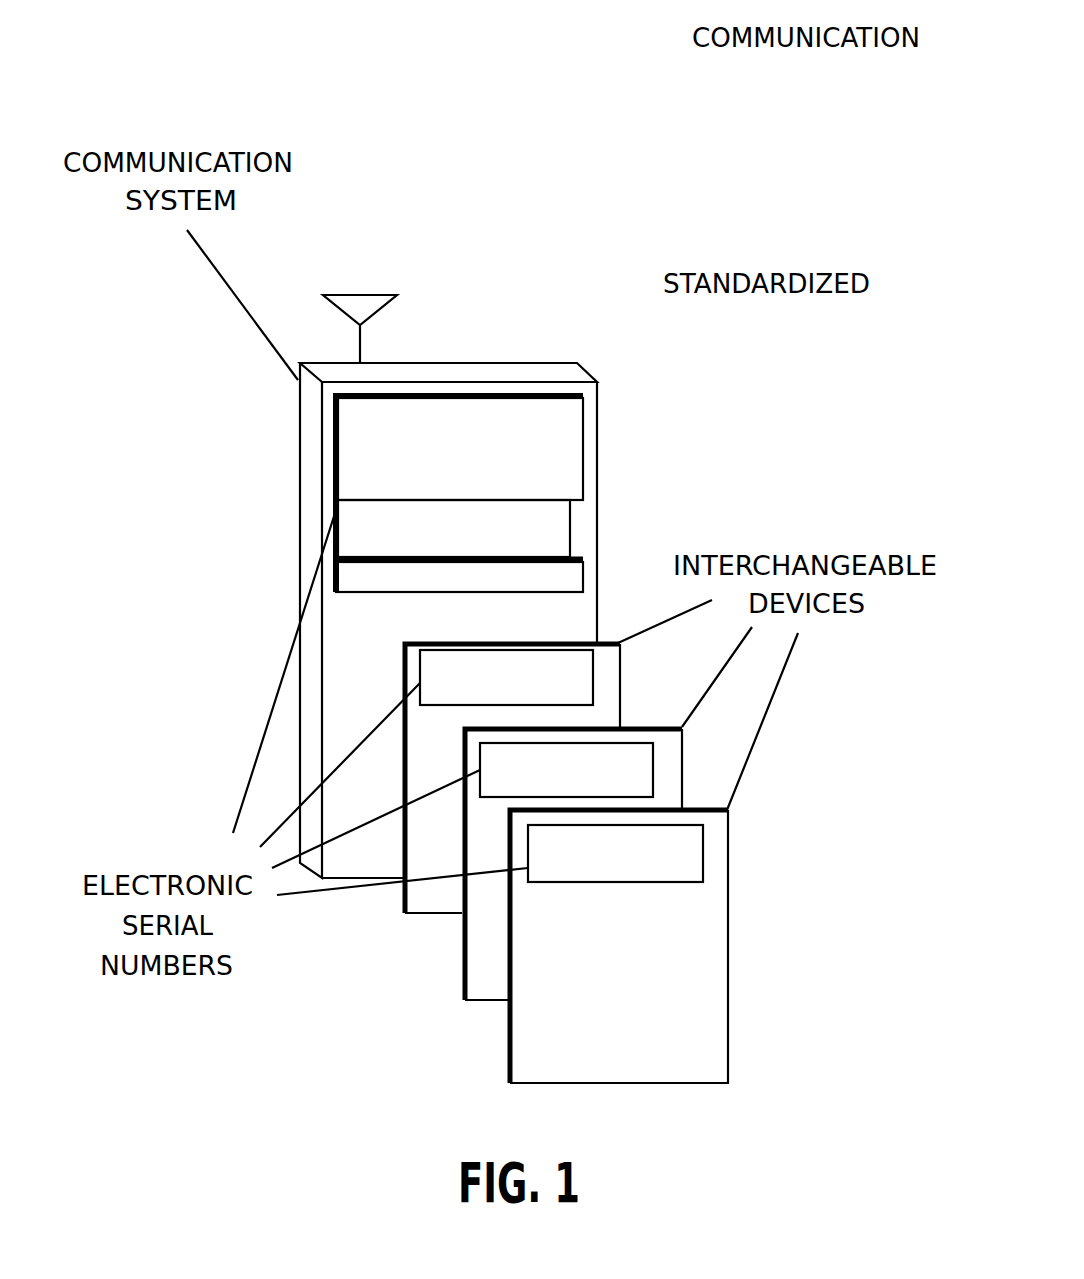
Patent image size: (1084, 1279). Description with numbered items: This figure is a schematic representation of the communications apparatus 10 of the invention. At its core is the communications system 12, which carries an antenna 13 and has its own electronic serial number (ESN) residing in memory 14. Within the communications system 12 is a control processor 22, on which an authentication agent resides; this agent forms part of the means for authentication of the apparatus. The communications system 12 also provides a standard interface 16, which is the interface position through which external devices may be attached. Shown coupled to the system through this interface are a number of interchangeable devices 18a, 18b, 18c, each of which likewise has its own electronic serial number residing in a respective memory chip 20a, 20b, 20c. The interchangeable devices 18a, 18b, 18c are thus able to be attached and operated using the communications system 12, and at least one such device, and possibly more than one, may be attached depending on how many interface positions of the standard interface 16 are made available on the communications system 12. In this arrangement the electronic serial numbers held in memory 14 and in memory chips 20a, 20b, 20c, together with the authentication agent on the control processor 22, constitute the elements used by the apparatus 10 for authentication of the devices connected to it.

The communications apparatus 10 is at (580, 240).
The communications system 12 is at (399, 360).
The antenna 13 is at (338, 294).
The memory 14 is at (330, 510).
The standard interface 16 is at (582, 570).
The interchangeable device 18a is at (636, 706).
The interchangeable device 18b is at (700, 790).
The interchangeable device 18c is at (750, 866).
The memory chip 20a is at (420, 657).
The memory chip 20b is at (480, 752).
The memory chip 20c is at (628, 881).
The control processor 22 is at (466, 390).